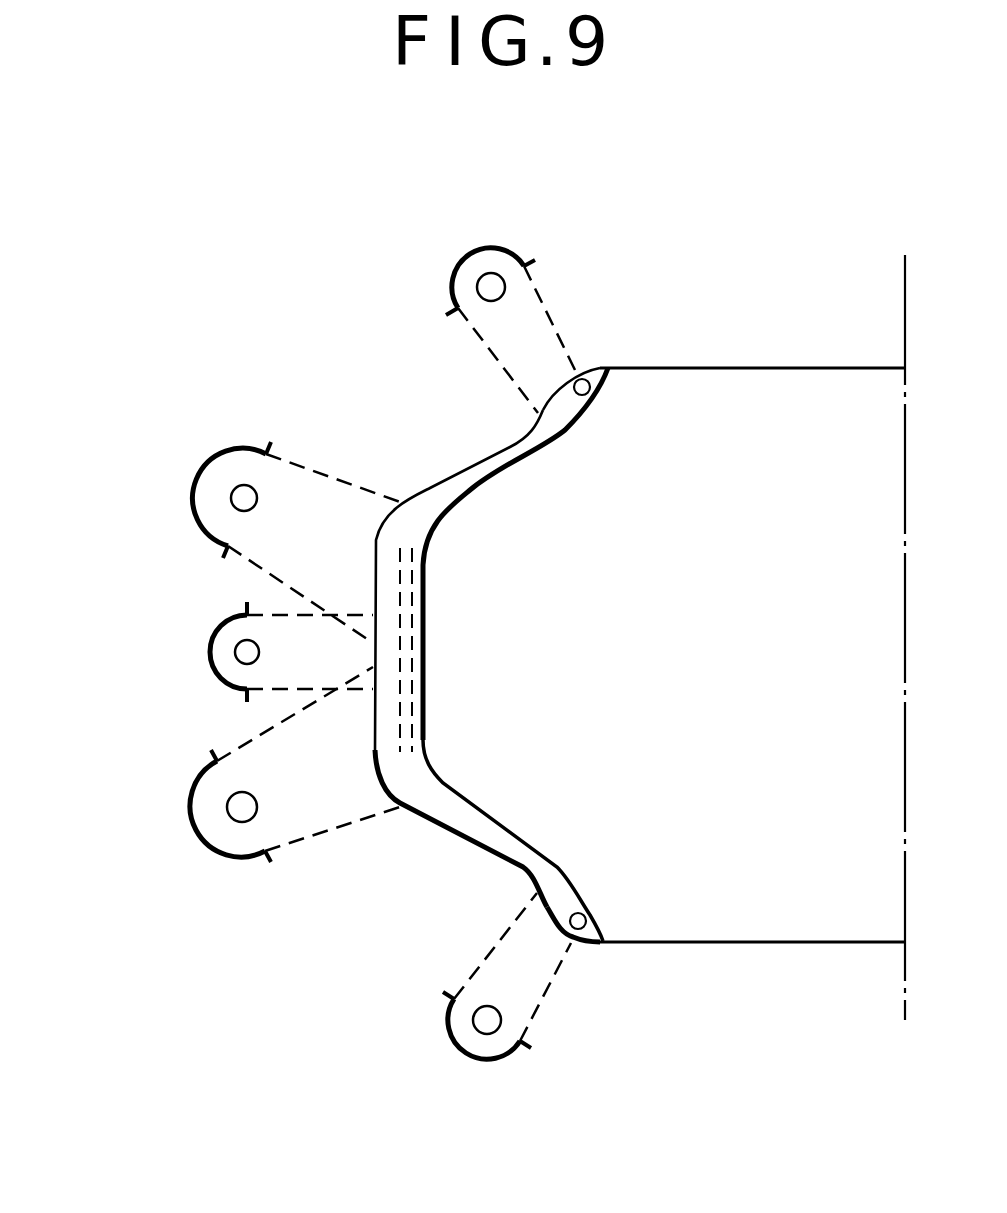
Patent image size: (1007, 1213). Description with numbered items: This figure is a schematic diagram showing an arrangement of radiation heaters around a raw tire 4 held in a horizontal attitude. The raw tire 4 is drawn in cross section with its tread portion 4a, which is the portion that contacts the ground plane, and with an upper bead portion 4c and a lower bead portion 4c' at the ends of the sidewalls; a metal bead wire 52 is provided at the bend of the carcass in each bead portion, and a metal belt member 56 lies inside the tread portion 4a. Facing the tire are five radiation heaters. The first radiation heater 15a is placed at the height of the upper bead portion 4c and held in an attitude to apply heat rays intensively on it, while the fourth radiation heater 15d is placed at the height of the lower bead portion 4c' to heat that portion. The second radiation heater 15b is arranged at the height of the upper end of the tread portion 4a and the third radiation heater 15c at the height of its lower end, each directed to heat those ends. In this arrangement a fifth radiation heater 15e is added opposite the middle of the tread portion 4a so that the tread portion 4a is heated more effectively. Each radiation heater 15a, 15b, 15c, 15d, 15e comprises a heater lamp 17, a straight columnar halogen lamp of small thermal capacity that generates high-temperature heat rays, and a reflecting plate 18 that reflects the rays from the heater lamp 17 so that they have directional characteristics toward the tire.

The raw tire 4 is at (817, 366).
The tread portion 4a is at (427, 672).
The upper bead portion 4c is at (590, 325).
The lower bead portion 4c' is at (593, 978).
The metal bead wire 52 is at (600, 392).
The metal belt member 56 is at (426, 574).
The first radiation heater 15a is at (443, 277).
The second radiation heater 15b is at (190, 476).
The third radiation heater 15c is at (180, 818).
The fourth radiation heater 15d is at (438, 1039).
The fifth radiation heater 15e is at (203, 690).
The heater lamp 17 is at (492, 278).
The reflecting plate 18 is at (478, 245).